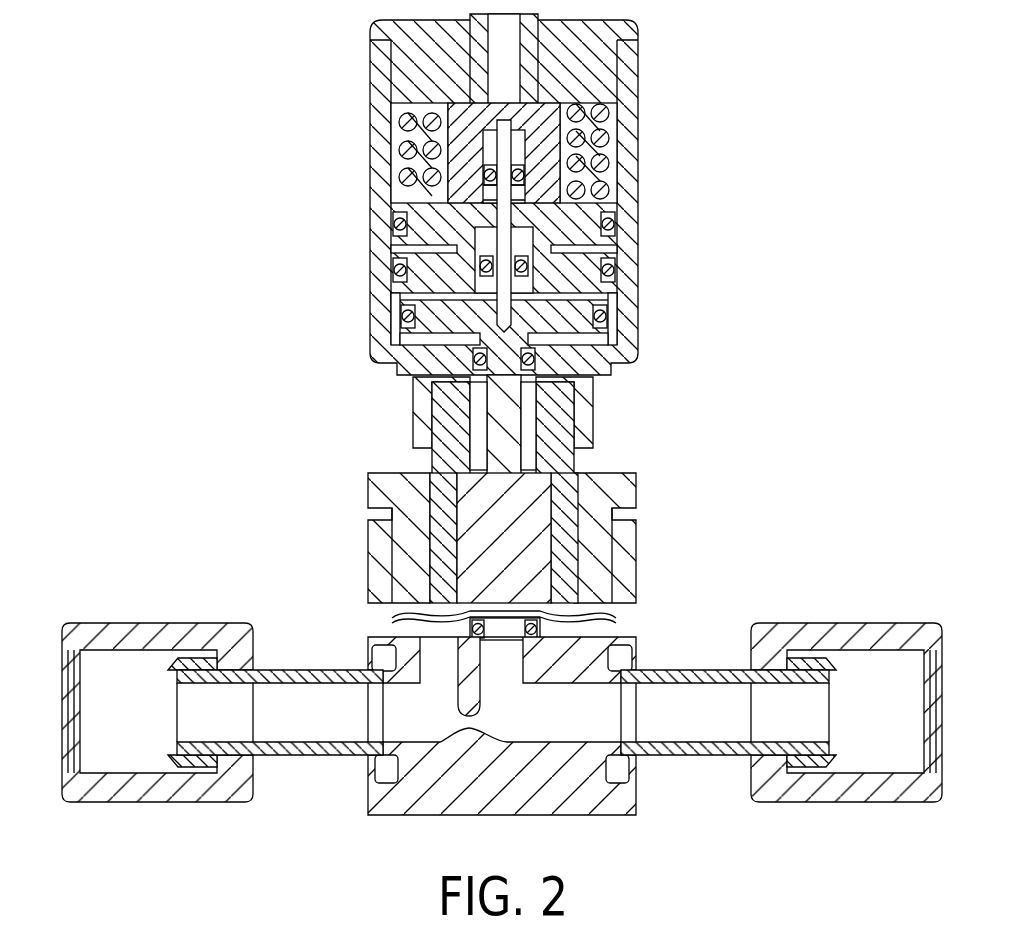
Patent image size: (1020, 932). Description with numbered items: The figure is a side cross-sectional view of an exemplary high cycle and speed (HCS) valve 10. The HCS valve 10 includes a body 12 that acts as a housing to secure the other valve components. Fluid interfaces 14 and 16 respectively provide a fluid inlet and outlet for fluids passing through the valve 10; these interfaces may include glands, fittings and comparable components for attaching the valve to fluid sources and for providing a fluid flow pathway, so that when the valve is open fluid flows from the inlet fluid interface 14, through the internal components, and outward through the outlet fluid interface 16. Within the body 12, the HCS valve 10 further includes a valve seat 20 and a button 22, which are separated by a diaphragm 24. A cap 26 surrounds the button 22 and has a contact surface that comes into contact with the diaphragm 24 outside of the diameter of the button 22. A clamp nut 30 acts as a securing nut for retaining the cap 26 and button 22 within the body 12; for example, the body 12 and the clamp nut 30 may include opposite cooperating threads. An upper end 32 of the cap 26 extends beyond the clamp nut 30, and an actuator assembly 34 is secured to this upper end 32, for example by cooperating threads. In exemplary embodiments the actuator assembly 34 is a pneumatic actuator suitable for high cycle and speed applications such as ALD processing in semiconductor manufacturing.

The high cycle and speed (HCS) valve 10 is at (244, 129).
The body 12 is at (638, 570).
The inlet fluid interface 14 is at (706, 760).
The outlet fluid interface 16 is at (303, 757).
The valve seat 20 is at (525, 626).
The button 22 is at (542, 517).
The diaphragm 24 is at (440, 633).
The cap 26 is at (425, 580).
The clamp nut 30 is at (383, 468).
The upper end of the cap 32 is at (560, 422).
The actuator assembly 34 is at (637, 130).